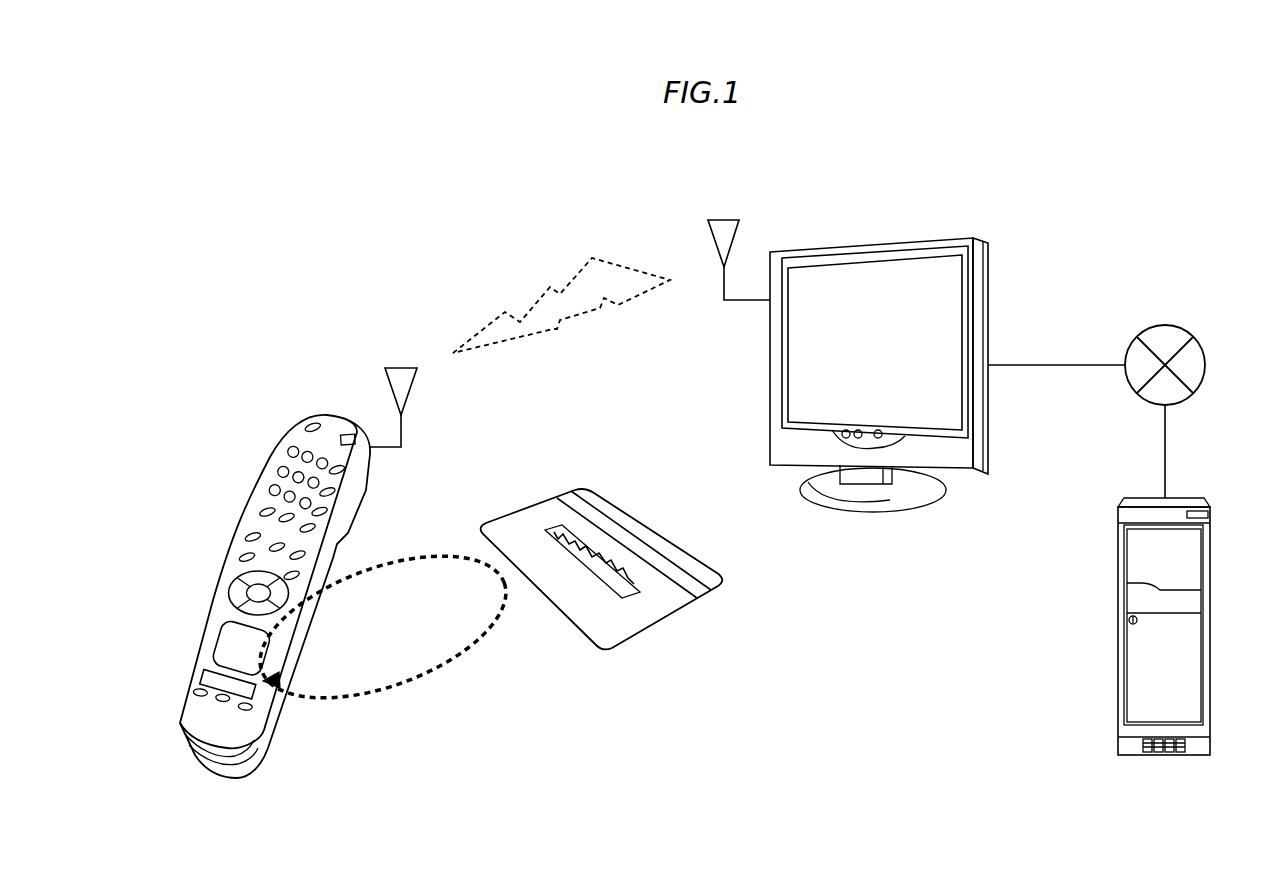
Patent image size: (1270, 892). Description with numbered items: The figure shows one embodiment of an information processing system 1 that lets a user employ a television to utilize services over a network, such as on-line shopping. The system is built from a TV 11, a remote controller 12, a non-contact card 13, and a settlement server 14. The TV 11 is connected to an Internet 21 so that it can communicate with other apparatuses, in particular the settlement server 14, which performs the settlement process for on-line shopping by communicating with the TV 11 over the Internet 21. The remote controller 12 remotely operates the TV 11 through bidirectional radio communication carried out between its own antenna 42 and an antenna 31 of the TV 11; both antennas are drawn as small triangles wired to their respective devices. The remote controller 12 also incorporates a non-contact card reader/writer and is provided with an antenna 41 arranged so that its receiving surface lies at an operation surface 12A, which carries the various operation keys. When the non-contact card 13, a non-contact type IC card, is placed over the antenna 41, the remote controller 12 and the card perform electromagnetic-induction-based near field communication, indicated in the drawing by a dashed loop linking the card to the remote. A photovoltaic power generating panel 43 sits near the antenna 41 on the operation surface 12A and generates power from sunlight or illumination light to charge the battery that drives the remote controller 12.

The information processing system 1 is at (1125, 180).
The TV 11 is at (990, 293).
The remote controller 12 is at (271, 456).
The operation surface 12A is at (192, 718).
The non-contact card 13 is at (662, 533).
The settlement server 14 is at (1212, 570).
The Internet 21 is at (1207, 365).
The antenna of the TV 31 is at (724, 219).
The antenna 41 is at (213, 630).
The antenna 42 is at (402, 366).
The photovoltaic power generating panel 43 is at (200, 672).